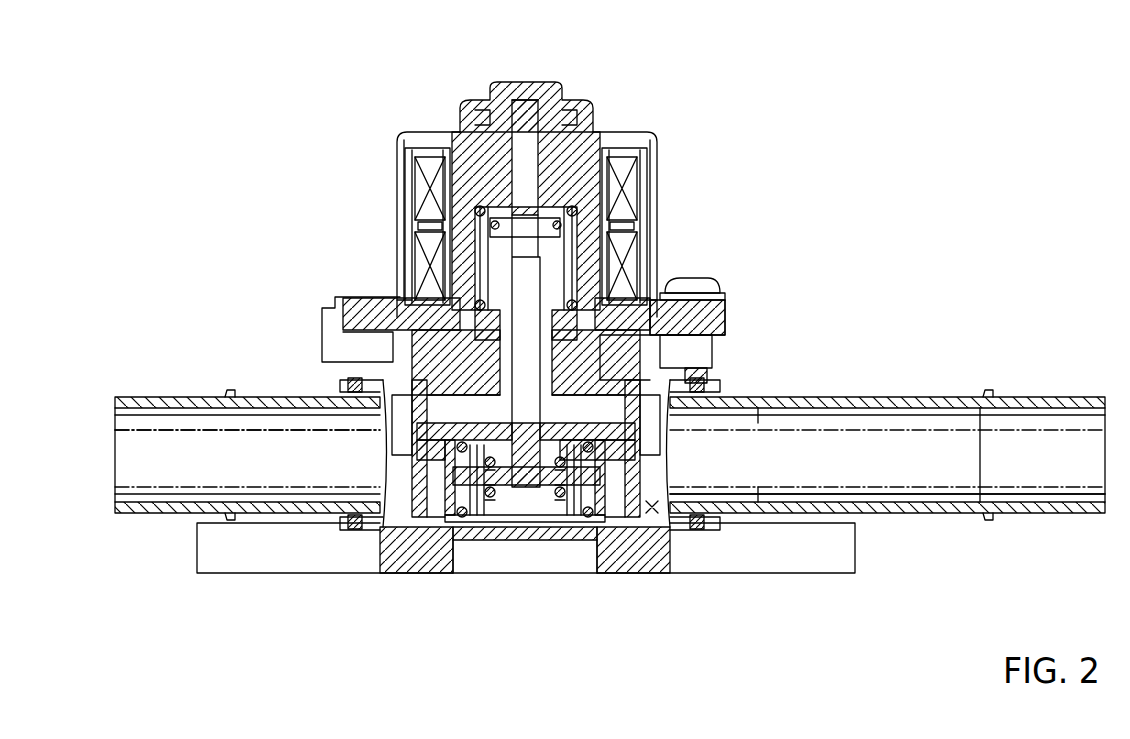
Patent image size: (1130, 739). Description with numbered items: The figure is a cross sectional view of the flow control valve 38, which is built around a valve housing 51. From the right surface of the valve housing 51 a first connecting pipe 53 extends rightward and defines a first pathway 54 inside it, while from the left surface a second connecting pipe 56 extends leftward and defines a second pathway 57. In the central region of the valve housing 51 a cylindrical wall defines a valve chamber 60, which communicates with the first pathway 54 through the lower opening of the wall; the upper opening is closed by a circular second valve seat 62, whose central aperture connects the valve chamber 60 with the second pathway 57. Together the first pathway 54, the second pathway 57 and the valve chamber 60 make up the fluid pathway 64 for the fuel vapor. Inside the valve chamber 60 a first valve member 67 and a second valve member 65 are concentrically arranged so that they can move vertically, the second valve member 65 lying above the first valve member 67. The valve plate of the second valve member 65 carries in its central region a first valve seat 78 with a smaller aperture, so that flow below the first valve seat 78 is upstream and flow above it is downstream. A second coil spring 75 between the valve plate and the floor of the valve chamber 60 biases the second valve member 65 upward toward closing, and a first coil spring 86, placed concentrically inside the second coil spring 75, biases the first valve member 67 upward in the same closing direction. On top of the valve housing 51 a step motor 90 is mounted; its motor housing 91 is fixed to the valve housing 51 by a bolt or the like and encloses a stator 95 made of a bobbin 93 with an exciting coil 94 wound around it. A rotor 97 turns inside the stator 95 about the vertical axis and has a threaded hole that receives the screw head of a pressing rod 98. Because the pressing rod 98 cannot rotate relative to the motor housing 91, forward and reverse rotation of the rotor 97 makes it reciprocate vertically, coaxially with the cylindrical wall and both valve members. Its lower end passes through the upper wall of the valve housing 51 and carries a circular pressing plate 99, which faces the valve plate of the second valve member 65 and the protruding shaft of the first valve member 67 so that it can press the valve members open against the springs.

The flow control valve 38 is at (541, 232).
The valve housing 51 is at (393, 586).
The first connecting pipe 53 is at (807, 396).
The first pathway 54 is at (810, 470).
The second connecting pipe 56 is at (178, 396).
The second pathway 57 is at (170, 478).
The valve chamber 60 is at (433, 530).
The second valve seat 62 is at (438, 432).
The fluid pathway 64 is at (652, 518).
The second valve member 65 is at (552, 414).
The first valve member 67 is at (538, 490).
The second coil spring 75 is at (600, 472).
The first valve seat 78 is at (506, 530).
The first coil spring 86 is at (560, 530).
The step motor 90 is at (628, 124).
The motor housing 91 is at (640, 194).
The bobbin 93 is at (430, 155).
The exciting coil 94 is at (420, 190).
The stator 95 is at (406, 143).
The rotor 97 is at (568, 114).
The pressing rod 98 is at (532, 278).
The pressing plate 99 is at (560, 436).